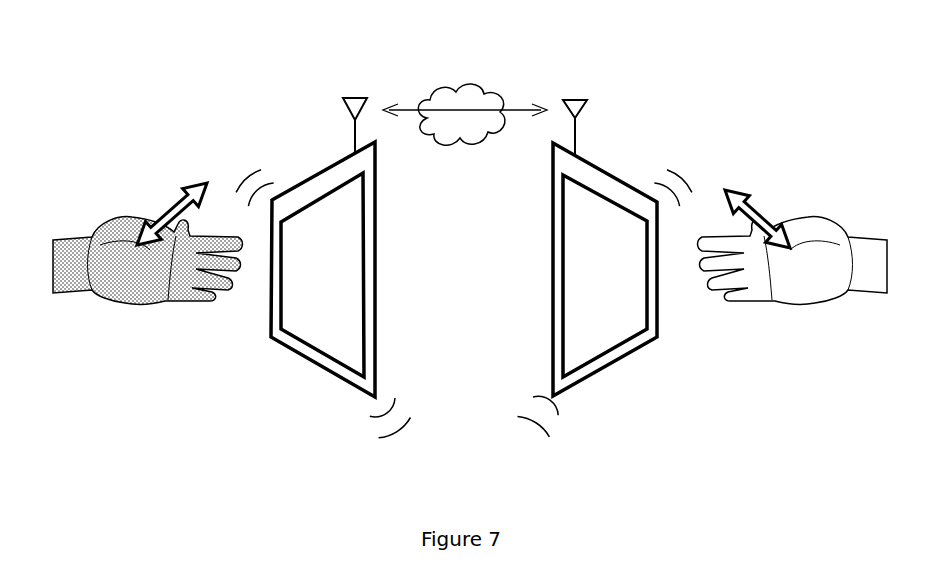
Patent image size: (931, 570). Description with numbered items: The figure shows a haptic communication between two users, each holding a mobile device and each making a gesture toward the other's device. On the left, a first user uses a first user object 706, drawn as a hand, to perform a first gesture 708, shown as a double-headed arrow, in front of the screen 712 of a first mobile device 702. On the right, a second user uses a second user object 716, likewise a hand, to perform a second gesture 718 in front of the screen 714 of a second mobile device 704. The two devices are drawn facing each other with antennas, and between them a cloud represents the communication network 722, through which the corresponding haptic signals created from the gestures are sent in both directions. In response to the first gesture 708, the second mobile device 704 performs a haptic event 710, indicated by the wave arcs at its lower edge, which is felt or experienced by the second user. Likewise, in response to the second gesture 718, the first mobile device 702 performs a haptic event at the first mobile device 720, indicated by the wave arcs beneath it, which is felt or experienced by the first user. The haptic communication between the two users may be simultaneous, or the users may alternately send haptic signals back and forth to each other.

The first mobile device 702 is at (323, 172).
The second mobile device 704 is at (605, 172).
The first user object 706 is at (102, 227).
The first gesture 708 is at (187, 183).
The haptic event 710 is at (573, 450).
The screen 712 is at (310, 205).
The screen 714 is at (627, 208).
The second user object 716 is at (815, 220).
The second gesture 718 is at (752, 202).
The haptic event at the first mobile device 720 is at (355, 440).
The communication network 722 is at (472, 90).